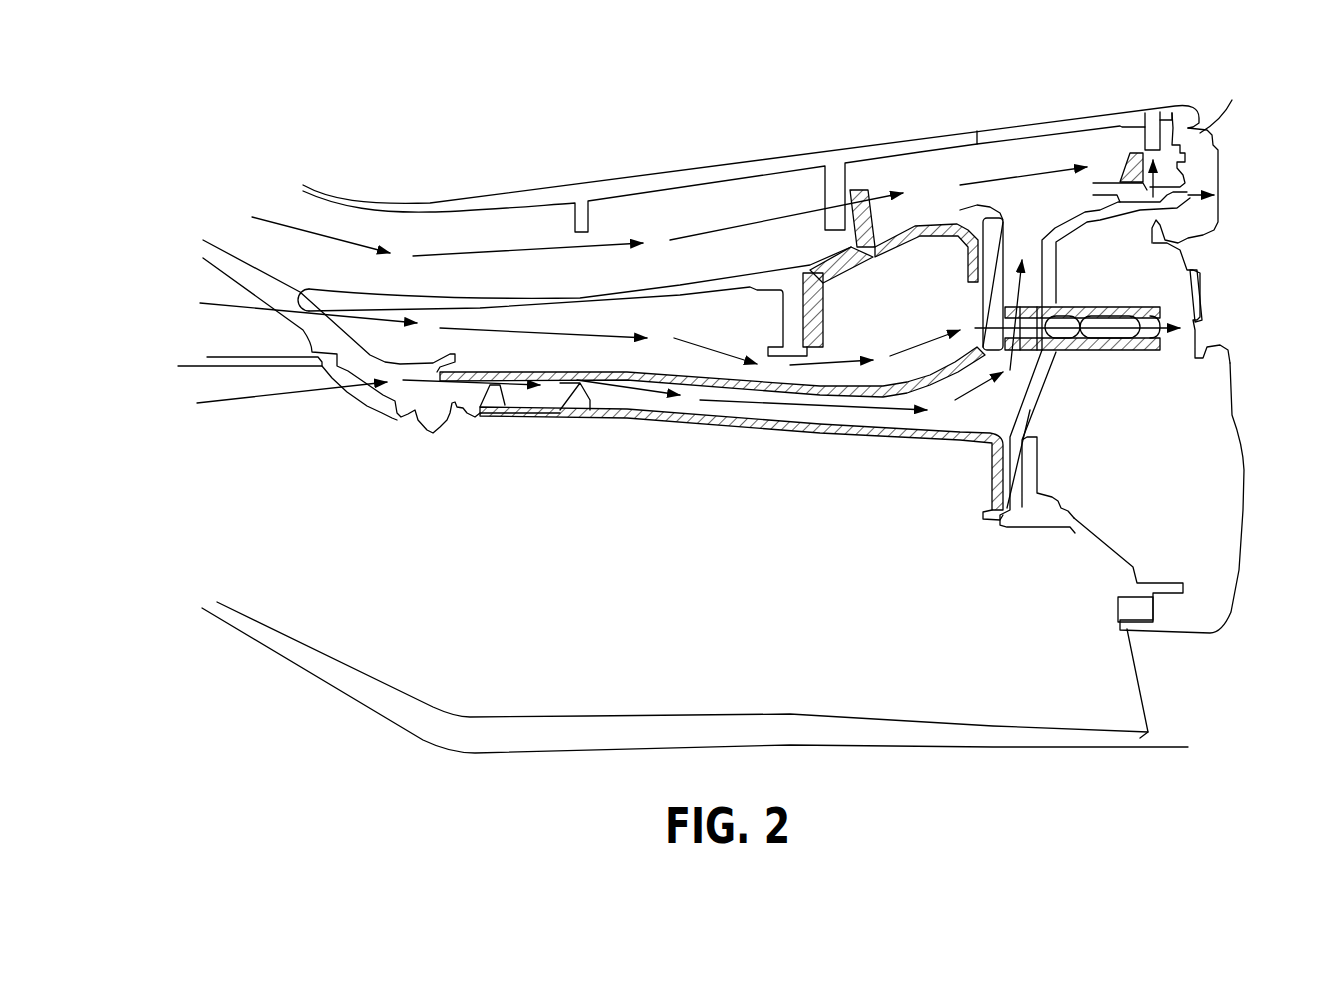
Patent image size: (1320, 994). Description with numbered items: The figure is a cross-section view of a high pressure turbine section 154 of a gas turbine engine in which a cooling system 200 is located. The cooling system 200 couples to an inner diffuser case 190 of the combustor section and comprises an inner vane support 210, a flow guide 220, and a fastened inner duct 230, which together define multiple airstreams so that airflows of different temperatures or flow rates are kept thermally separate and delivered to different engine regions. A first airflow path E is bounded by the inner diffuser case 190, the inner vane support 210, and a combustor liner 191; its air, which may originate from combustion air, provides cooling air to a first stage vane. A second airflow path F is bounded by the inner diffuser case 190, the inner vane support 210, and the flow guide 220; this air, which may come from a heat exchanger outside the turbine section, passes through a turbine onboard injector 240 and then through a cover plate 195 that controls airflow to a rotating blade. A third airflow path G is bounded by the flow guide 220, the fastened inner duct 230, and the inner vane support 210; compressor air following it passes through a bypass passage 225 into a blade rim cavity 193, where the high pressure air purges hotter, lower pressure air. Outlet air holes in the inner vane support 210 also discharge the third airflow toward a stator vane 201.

The high pressure turbine section 154 is at (195, 168).
The inner diffuser case 190 is at (280, 297).
The combustor liner 191 is at (727, 161).
The blade rim cavity 193 is at (1200, 168).
The cover plate 195 is at (1207, 283).
The cooling system 200 is at (1082, 440).
The stator vane 201 is at (1153, 112).
The inner vane support 210 is at (897, 250).
The flow guide 220 is at (650, 372).
The bypass passage 225 is at (1055, 288).
The fastened inner duct 230 is at (878, 428).
The turbine onboard injector (TOBI) 240 is at (1103, 333).
The first airflow path E is at (250, 215).
The second airflow path F is at (202, 305).
The third airflow path G is at (217, 403).